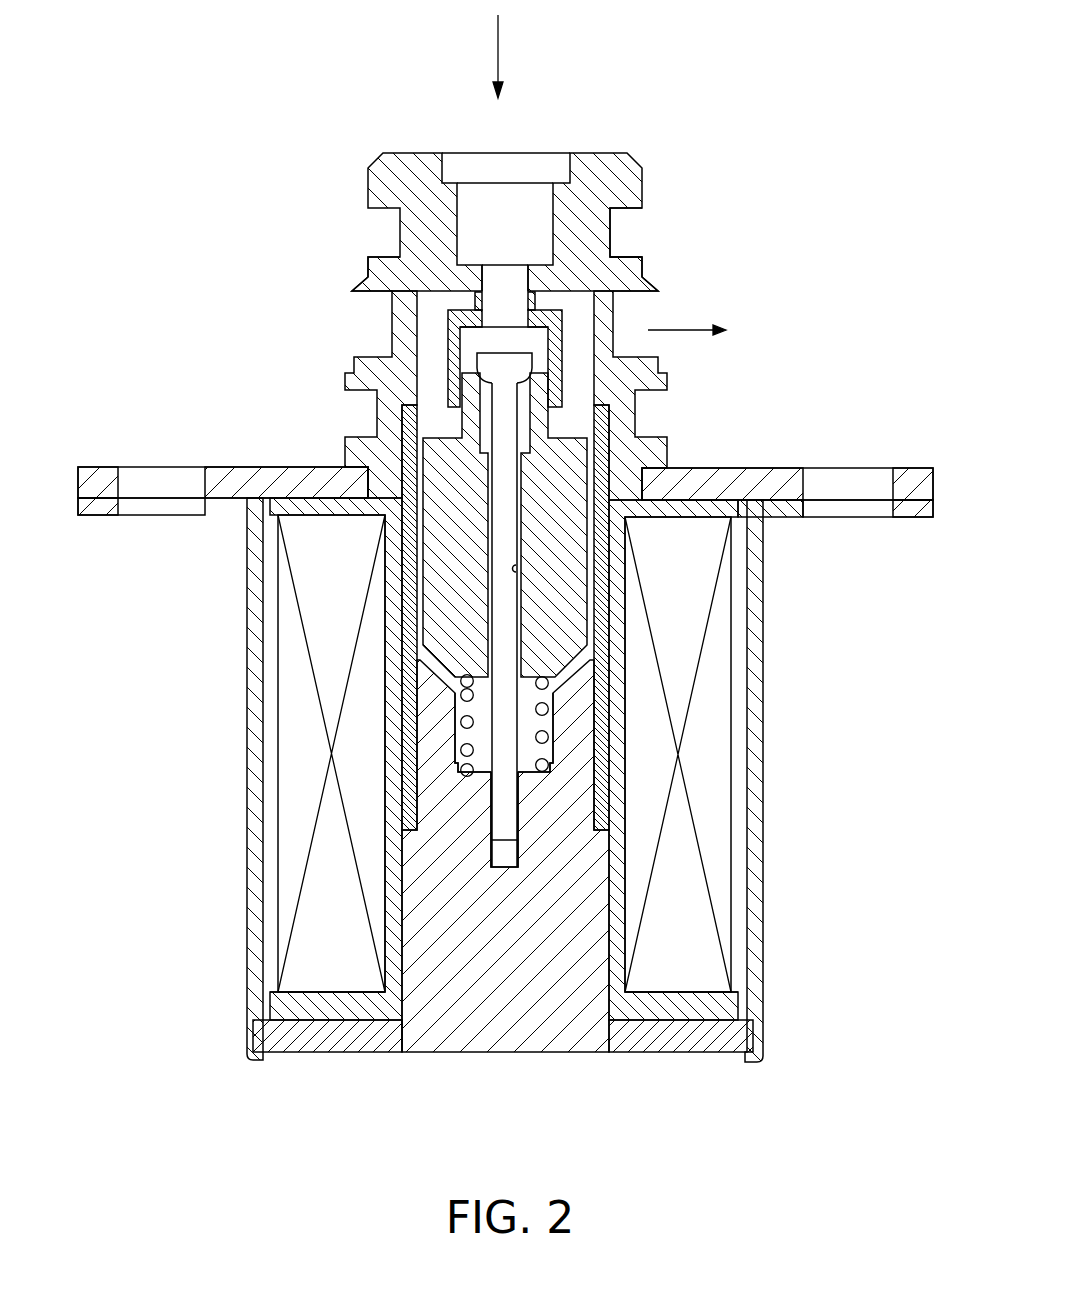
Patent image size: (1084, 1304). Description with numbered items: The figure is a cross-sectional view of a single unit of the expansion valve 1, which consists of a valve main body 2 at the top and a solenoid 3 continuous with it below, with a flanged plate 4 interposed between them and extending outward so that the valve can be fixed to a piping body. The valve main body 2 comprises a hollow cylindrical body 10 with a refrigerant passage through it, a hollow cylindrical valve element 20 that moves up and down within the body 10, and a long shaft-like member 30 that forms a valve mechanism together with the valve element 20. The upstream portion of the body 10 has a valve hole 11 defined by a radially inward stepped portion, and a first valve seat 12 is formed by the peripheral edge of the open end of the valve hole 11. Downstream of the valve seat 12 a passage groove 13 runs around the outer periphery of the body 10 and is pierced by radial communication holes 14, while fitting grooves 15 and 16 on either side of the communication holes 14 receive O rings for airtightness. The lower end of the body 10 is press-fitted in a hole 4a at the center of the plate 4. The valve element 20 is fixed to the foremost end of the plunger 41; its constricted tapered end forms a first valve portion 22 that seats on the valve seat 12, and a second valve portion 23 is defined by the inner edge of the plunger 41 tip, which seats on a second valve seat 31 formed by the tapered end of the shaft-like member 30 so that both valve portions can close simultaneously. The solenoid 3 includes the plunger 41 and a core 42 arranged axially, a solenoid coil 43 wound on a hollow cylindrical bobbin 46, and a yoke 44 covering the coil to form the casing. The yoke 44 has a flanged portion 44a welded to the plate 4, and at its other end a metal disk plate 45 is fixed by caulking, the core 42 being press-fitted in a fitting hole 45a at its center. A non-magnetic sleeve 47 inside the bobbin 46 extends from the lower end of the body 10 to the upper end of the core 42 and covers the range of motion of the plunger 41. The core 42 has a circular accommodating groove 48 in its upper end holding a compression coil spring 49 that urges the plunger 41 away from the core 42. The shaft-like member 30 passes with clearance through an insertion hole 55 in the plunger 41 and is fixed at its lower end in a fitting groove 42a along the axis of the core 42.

The expansion valve 1 is at (745, 200).
The valve main body 2 is at (641, 156).
The solenoid 3 is at (775, 668).
The plate 4 is at (244, 458).
The hole 4a is at (372, 478).
The body 10 is at (378, 195).
The valve hole 11 is at (527, 287).
The valve seat 12 is at (537, 287).
The passage groove 13 is at (355, 299).
The communication holes 14 is at (614, 292).
The fitting groove 15 is at (638, 218).
The fitting groove 16 is at (650, 392).
The valve element 20 is at (450, 333).
The valve portion 22 is at (480, 293).
The valve portion 23 is at (477, 368).
The shaft-like member 30 is at (487, 428).
The valve seat 31 is at (537, 368).
The plunger 41 is at (440, 617).
The core 42 is at (562, 1020).
The fitting groove 42a is at (512, 857).
The solenoid coil 43 is at (293, 720).
The yoke 44 is at (255, 845).
The flanged portion 44a is at (100, 512).
The plate 45 is at (330, 1043).
The fitting hole 45a is at (400, 1037).
The bobbin 46 is at (285, 1007).
The sleeve 47 is at (402, 773).
The accommodating groove 48 is at (552, 717).
The compression coil spring 49 is at (545, 740).
The insertion hole 55 is at (516, 568).